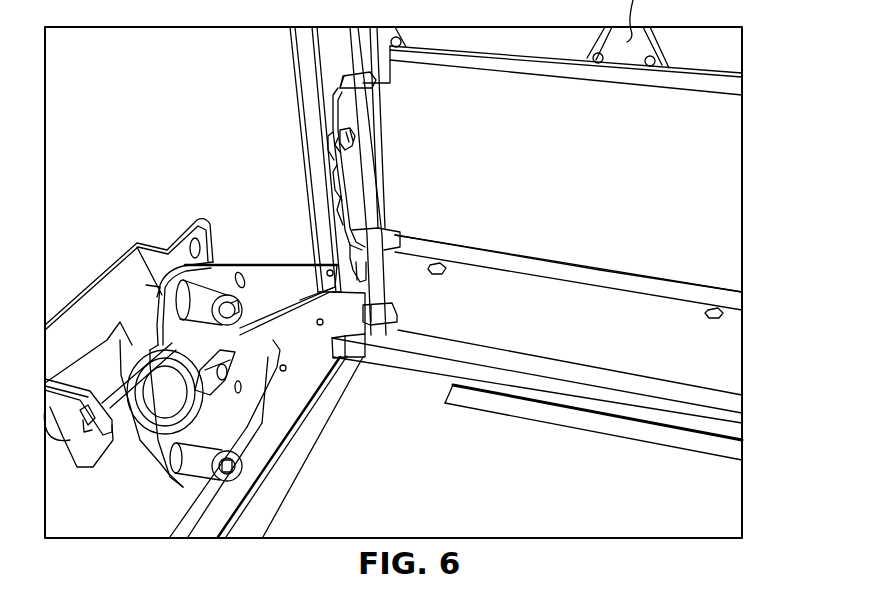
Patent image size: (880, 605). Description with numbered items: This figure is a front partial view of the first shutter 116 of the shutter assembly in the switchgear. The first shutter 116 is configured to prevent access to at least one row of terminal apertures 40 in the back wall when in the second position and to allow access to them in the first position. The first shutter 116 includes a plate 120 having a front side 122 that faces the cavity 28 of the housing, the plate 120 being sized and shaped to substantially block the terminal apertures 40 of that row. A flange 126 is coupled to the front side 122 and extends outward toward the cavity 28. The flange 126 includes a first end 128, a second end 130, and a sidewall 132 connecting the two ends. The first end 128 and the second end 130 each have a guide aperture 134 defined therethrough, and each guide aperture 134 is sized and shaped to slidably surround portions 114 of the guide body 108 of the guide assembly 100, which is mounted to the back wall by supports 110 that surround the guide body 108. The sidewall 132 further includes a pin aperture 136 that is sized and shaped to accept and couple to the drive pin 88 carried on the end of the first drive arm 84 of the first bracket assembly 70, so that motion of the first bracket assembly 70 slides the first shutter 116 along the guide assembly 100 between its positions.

The cavity 28 is at (182, 158).
The terminal aperture 40 is at (657, 47).
The first bracket assembly 70 is at (232, 258).
The first drive arm 84 is at (305, 190).
The drive pin 88 is at (360, 141).
The guide assembly 100 is at (397, 317).
The guide body 108 is at (376, 285).
The support 110 is at (372, 337).
The portions of guide body 114 is at (388, 228).
The first shutter 116 is at (605, 253).
The plate 120 is at (520, 248).
The front side 122 is at (551, 222).
The flange 126 is at (332, 114).
The first end 128 is at (358, 250).
The second end 130 is at (338, 80).
The sidewall 132 is at (338, 184).
The guide aperture 134 is at (345, 220).
The pin aperture 136 is at (328, 141).